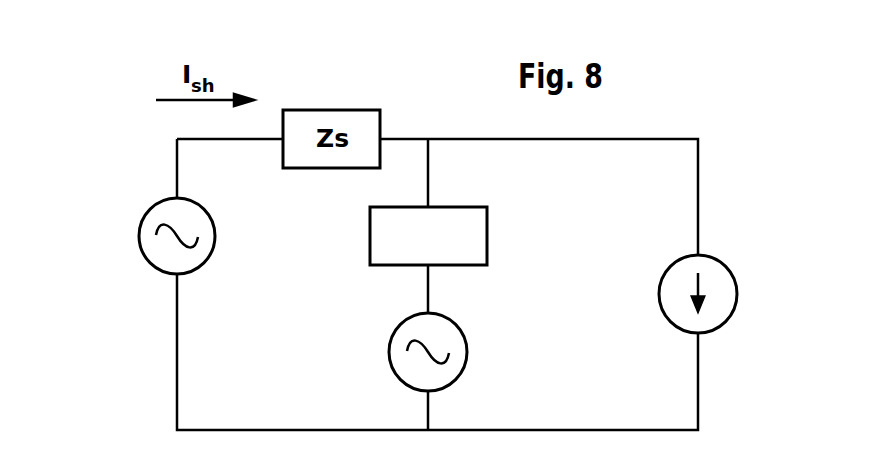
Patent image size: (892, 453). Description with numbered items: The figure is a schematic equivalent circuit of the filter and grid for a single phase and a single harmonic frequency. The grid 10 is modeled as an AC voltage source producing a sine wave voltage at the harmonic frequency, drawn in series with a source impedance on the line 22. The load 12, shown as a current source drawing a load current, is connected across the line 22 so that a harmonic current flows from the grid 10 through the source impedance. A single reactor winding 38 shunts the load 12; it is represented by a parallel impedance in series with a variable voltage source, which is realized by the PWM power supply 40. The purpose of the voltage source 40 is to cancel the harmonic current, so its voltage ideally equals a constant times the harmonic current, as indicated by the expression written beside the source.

The grid 10 is at (140, 226).
The load 12 is at (717, 258).
The line 22 is at (467, 139).
The reactor winding 38 is at (487, 236).
The PWM power supply 40 is at (354, 355).